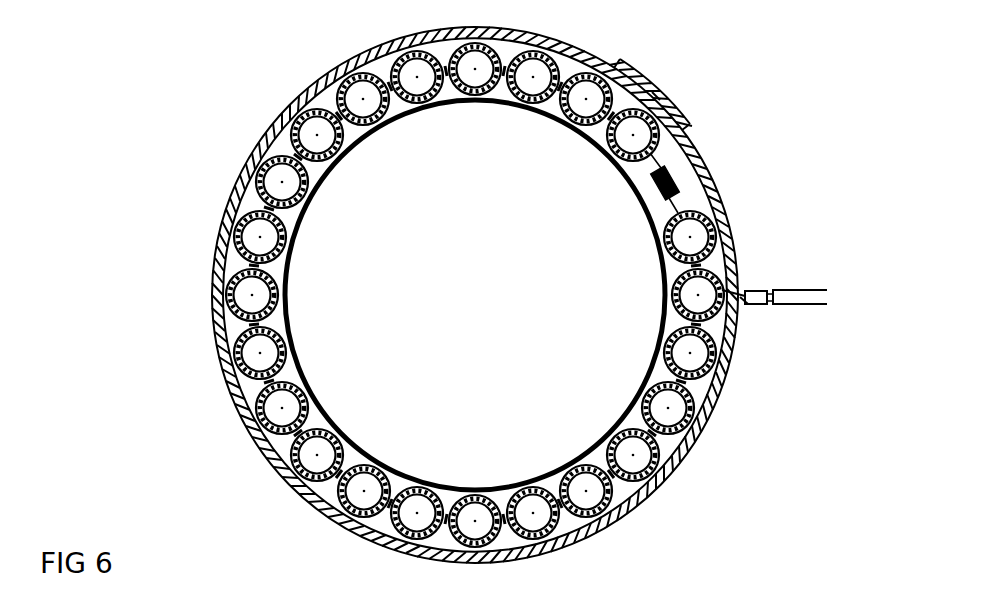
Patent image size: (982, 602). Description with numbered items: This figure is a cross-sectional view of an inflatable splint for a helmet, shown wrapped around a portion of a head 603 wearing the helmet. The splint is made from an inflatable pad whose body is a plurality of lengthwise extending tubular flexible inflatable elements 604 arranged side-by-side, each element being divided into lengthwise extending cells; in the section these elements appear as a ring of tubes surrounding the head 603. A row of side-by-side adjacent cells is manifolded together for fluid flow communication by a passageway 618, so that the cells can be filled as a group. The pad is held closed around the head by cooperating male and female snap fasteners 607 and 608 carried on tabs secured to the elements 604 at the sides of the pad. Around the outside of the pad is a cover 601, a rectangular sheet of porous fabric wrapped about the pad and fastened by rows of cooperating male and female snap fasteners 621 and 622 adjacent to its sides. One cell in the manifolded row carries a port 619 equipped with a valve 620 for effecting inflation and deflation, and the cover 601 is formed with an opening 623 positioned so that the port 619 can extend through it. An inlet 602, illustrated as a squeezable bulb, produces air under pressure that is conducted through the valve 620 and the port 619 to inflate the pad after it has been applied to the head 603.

The cover 601 is at (556, 290).
The inlet 602 is at (818, 289).
The head 603 is at (484, 324).
The tubular flexible inflatable elements 604 is at (667, 263).
The male snap fastener 607 is at (653, 192).
The female snap fastener 608 is at (670, 168).
The passageway 618 is at (504, 72).
The port 619 is at (741, 302).
The valve 620 is at (763, 291).
The male snap fastener 621 is at (656, 96).
The female snap fastener 622 is at (662, 98).
The opening 623 is at (738, 293).